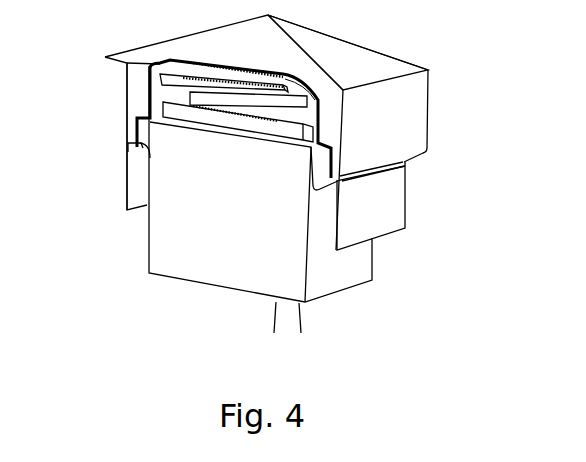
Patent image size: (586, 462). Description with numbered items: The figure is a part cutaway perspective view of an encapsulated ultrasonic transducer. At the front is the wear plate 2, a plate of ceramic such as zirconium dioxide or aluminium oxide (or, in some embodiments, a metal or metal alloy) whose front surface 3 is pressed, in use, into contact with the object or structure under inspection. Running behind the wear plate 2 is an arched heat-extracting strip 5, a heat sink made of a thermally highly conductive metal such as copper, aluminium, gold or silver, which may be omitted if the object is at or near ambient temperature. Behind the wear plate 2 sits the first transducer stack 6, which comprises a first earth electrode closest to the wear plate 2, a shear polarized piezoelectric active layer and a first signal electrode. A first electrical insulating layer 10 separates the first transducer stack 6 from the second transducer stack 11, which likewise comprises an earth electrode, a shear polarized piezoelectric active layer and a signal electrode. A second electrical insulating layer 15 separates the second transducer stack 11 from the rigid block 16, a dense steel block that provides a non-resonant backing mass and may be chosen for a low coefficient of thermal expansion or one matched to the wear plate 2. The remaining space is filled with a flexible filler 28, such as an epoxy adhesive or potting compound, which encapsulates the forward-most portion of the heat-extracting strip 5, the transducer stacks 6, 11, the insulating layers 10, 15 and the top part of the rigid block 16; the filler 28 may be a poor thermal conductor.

The wear plate 2 is at (418, 108).
The front surface 3 is at (374, 68).
The heat-extracting strip 5 is at (395, 205).
The first transducer stack 6 is at (200, 67).
The first electrical insulating layer 10 is at (195, 77).
The second transducer stack 11 is at (197, 103).
The second electrical insulating layer 15 is at (148, 123).
The rigid block 16 is at (158, 242).
The flexible filler 28 is at (140, 157).